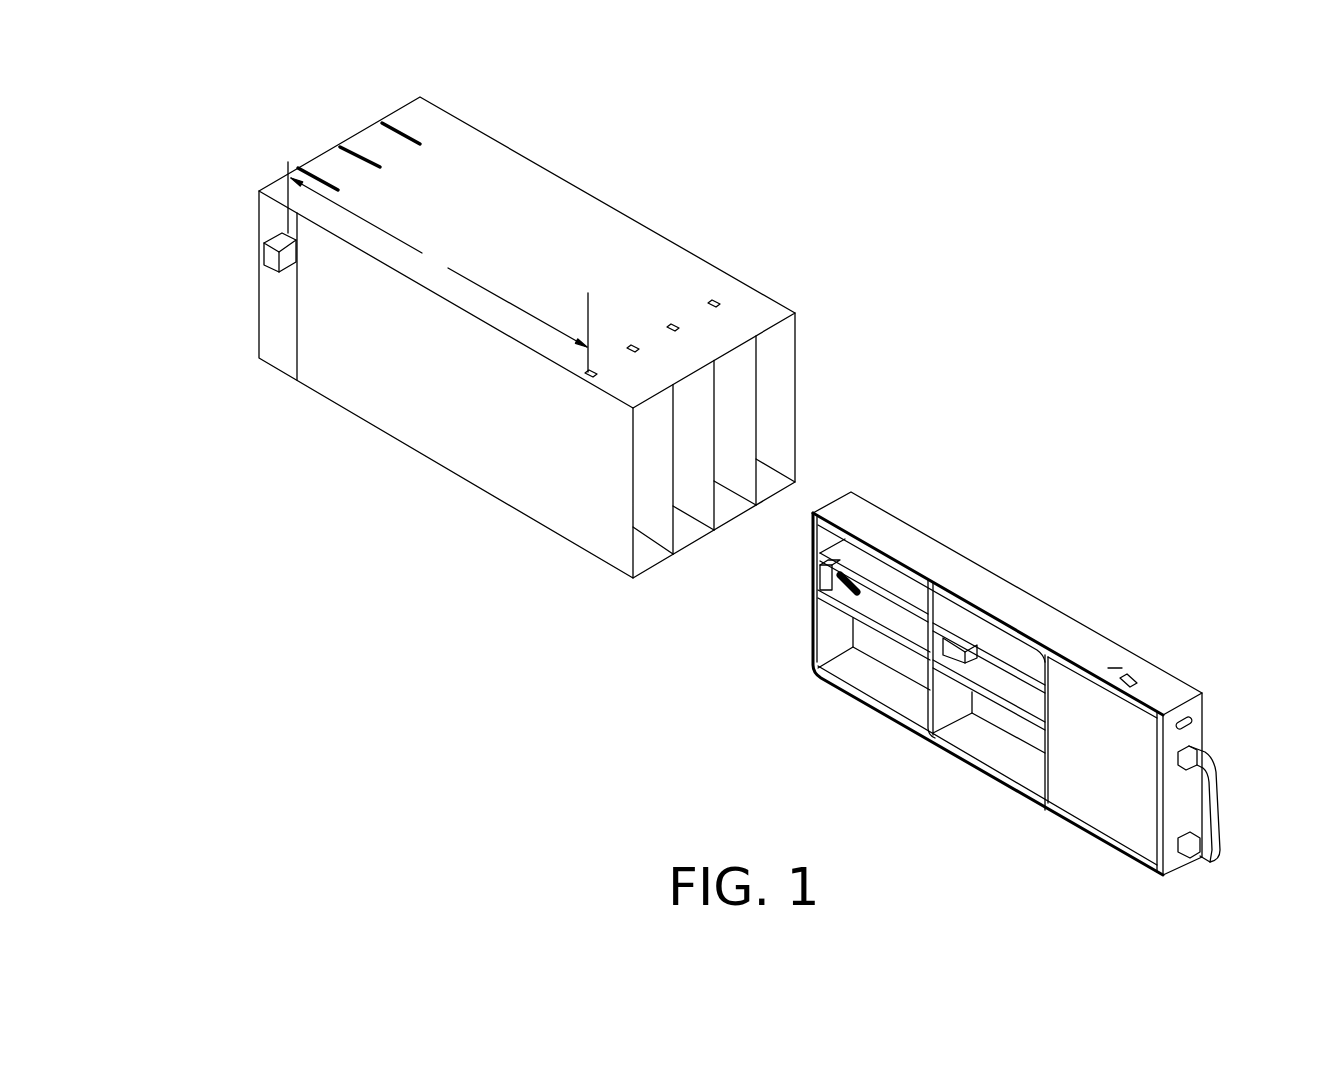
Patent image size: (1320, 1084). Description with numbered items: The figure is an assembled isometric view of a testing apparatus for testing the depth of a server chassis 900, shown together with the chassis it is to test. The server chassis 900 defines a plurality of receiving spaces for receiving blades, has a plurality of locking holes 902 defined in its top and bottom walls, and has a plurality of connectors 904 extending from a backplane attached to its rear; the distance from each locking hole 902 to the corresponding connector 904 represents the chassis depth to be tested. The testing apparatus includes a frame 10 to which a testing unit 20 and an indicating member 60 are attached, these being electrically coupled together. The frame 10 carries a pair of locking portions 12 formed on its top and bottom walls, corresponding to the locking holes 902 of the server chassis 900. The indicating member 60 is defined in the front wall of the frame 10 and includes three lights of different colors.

The server chassis 900 is at (585, 217).
The locking hole 902 is at (589, 374).
The connector 904 is at (272, 261).
The frame 10 is at (882, 523).
The testing unit 20 is at (818, 578).
The locking portion 12 is at (1126, 679).
The indicating member 60 is at (1195, 726).